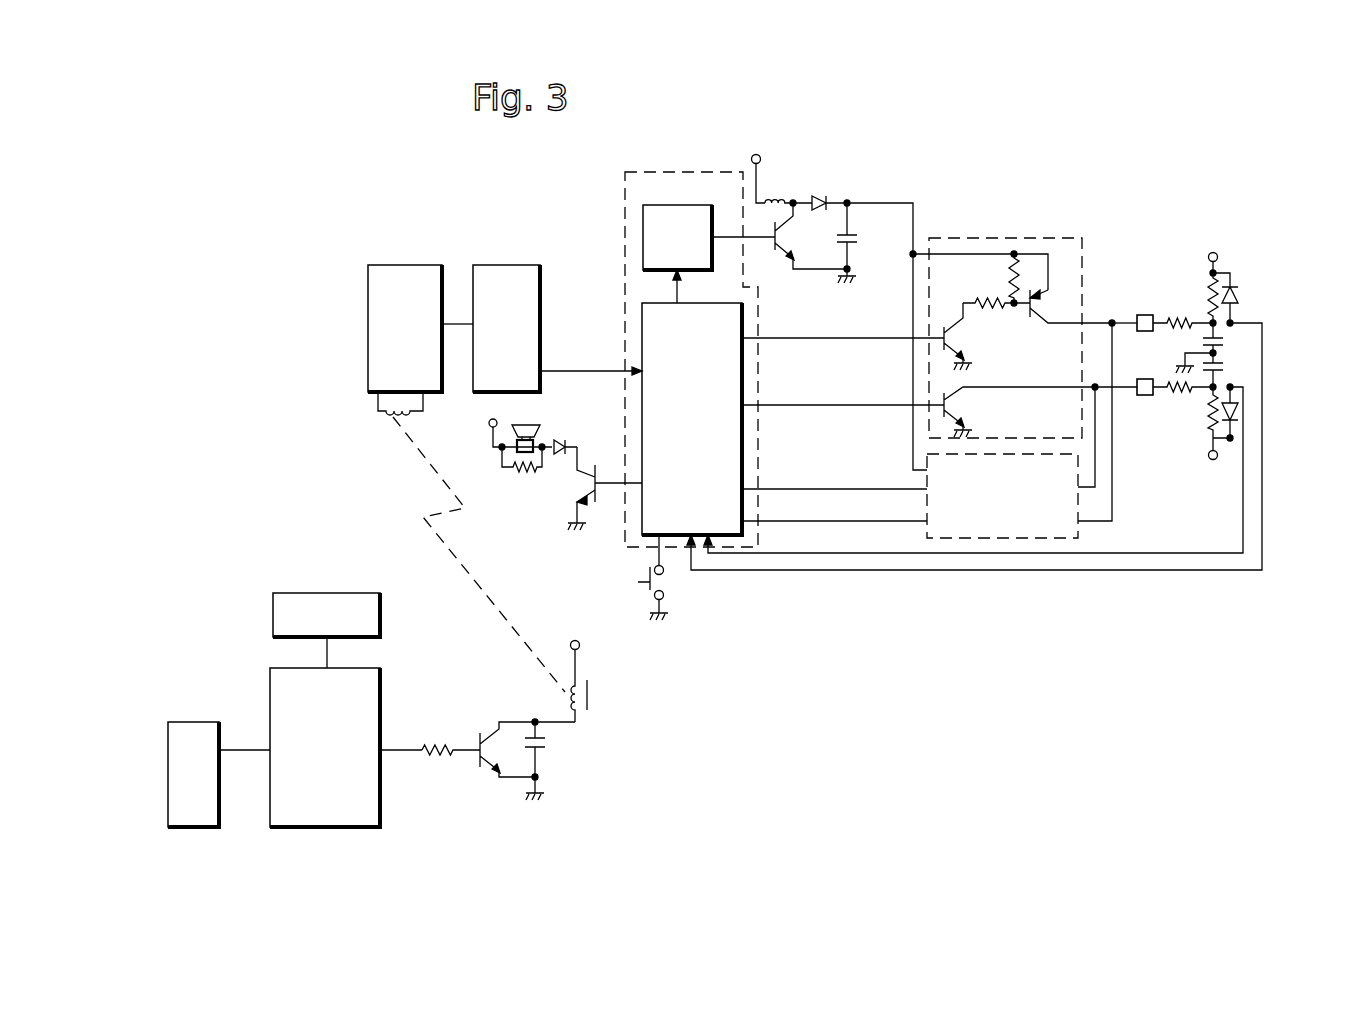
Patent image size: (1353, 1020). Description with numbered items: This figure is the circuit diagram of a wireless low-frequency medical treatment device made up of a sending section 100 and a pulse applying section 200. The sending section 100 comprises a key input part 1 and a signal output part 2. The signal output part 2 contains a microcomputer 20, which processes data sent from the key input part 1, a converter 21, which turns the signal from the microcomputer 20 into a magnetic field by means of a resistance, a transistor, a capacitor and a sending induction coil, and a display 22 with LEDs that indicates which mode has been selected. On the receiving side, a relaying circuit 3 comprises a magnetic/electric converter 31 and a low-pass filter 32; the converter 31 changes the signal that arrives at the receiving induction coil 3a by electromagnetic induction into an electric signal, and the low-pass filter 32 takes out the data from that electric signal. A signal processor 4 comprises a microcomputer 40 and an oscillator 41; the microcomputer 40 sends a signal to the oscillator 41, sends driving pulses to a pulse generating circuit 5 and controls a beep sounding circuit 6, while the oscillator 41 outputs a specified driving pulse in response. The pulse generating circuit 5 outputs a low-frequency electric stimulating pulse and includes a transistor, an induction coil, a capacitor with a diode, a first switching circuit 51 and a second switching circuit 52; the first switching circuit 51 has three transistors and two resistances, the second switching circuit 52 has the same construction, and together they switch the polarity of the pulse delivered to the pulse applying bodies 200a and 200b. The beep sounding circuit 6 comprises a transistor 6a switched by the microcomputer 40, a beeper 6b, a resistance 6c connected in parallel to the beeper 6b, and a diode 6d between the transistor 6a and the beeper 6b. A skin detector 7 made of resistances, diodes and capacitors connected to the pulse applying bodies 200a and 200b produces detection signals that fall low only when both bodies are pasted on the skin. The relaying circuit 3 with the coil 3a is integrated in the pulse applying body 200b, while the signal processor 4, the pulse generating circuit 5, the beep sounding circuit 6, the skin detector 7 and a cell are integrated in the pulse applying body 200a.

The key input part 1 is at (197, 815).
The signal output part 2 is at (544, 755).
The relaying circuit 3 is at (422, 297).
The induction coil 3a is at (378, 409).
The signal processor 4 is at (653, 165).
The pulse generating circuit 5 is at (1006, 258).
The beep sounding circuit 6 is at (555, 471).
The transistor 6a is at (568, 495).
The beeper 6b is at (540, 422).
The resistance 6c is at (522, 474).
The diode 6d is at (568, 436).
The skin detector 7 is at (1011, 361).
The microcomputer 20 is at (325, 815).
The converter 21 is at (596, 720).
The display 22 is at (275, 620).
The magnetic/electric converter 31 is at (405, 280).
The low-pass filter 32 is at (512, 280).
The microcomputer 40 is at (660, 330).
The oscillator 41 is at (700, 212).
The first switching circuit 51 is at (1022, 238).
The second switching circuit 52 is at (1010, 540).
The sending section 100 is at (192, 662).
The pulse applying section 200 is at (1011, 422).
The pulse applying body 200a is at (1142, 313).
The pulse applying body 200b is at (1140, 400).